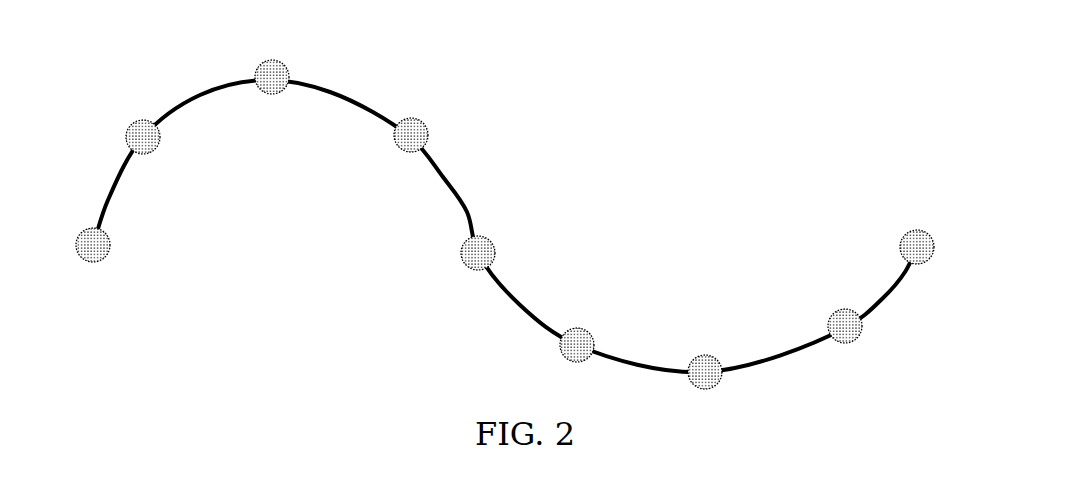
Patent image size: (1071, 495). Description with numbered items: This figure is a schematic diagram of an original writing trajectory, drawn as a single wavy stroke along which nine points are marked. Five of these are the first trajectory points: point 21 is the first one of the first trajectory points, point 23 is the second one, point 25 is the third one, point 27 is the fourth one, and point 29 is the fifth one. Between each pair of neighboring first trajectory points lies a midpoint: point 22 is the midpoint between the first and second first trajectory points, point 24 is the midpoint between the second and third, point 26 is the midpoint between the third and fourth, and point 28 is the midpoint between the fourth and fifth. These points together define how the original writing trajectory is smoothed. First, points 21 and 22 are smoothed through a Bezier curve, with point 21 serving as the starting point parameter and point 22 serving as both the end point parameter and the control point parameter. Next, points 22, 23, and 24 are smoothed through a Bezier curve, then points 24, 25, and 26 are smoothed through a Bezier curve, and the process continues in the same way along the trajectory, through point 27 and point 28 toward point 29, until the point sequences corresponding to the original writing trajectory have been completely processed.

The point 21 is at (80, 232).
The point 22 is at (134, 122).
The point 23 is at (268, 63).
The point 24 is at (406, 121).
The point 25 is at (472, 240).
The point 26 is at (572, 332).
The point 27 is at (700, 360).
The point 28 is at (834, 312).
The point 29 is at (915, 238).